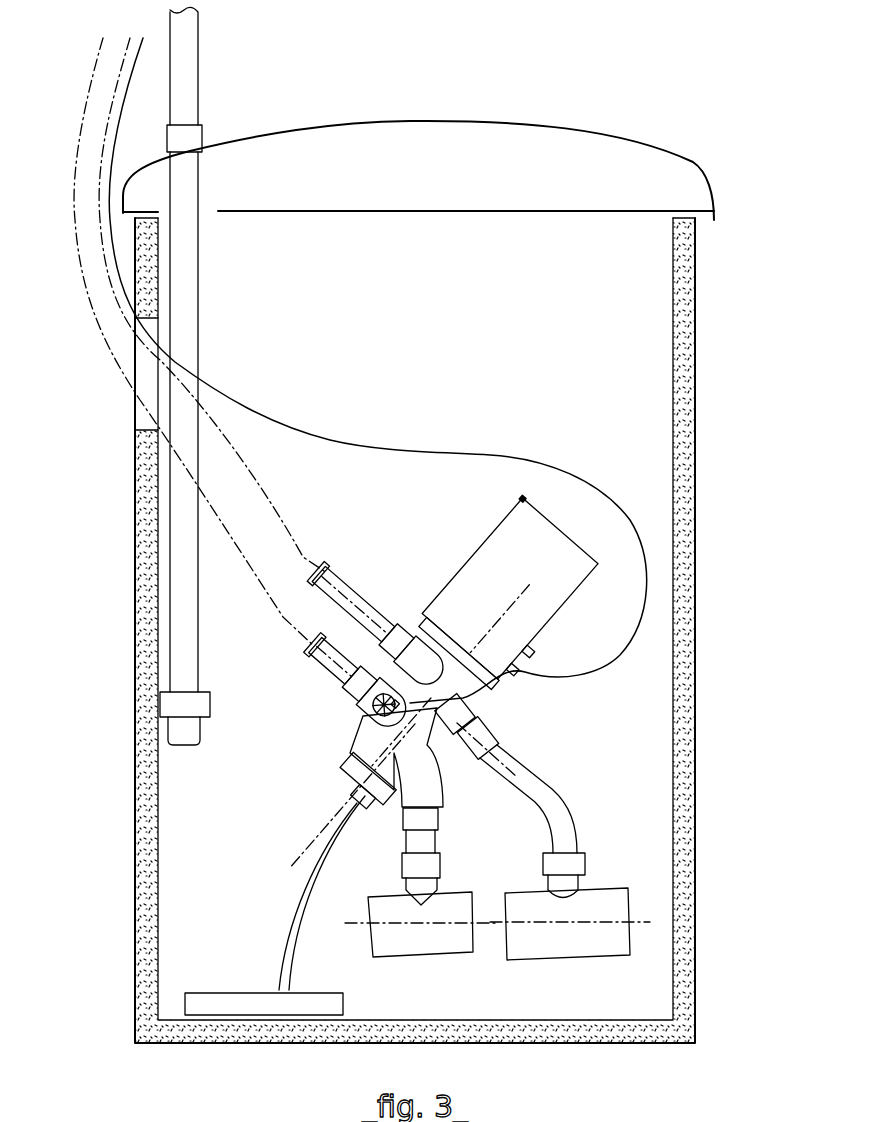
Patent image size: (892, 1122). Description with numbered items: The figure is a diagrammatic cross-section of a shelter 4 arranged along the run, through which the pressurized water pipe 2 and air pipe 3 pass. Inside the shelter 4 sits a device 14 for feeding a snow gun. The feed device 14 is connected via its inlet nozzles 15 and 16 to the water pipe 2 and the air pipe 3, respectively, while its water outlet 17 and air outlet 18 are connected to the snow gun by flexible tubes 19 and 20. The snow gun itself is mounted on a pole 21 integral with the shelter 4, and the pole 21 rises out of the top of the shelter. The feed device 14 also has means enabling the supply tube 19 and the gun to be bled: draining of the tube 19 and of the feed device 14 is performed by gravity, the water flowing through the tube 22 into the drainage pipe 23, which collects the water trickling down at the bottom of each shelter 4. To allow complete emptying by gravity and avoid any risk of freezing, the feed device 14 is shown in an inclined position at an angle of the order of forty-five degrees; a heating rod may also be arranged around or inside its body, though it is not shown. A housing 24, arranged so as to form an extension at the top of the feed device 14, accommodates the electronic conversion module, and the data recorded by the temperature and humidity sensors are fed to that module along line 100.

The water pipe 2 is at (431, 957).
The air pipe 3 is at (572, 958).
The shelter 4 is at (672, 345).
The feed device 14 is at (520, 704).
The inlet nozzle 15 is at (440, 793).
The inlet nozzle 16 is at (493, 712).
The water outlet 17 is at (362, 716).
The air outlet 18 is at (417, 628).
The flexible tube 19 is at (316, 662).
The flexible tube 20 is at (340, 572).
The pole 21 is at (200, 62).
The tube 22 is at (291, 914).
The drainage pipe 23 is at (232, 992).
The housing 24 is at (550, 626).
The line 100 is at (490, 455).